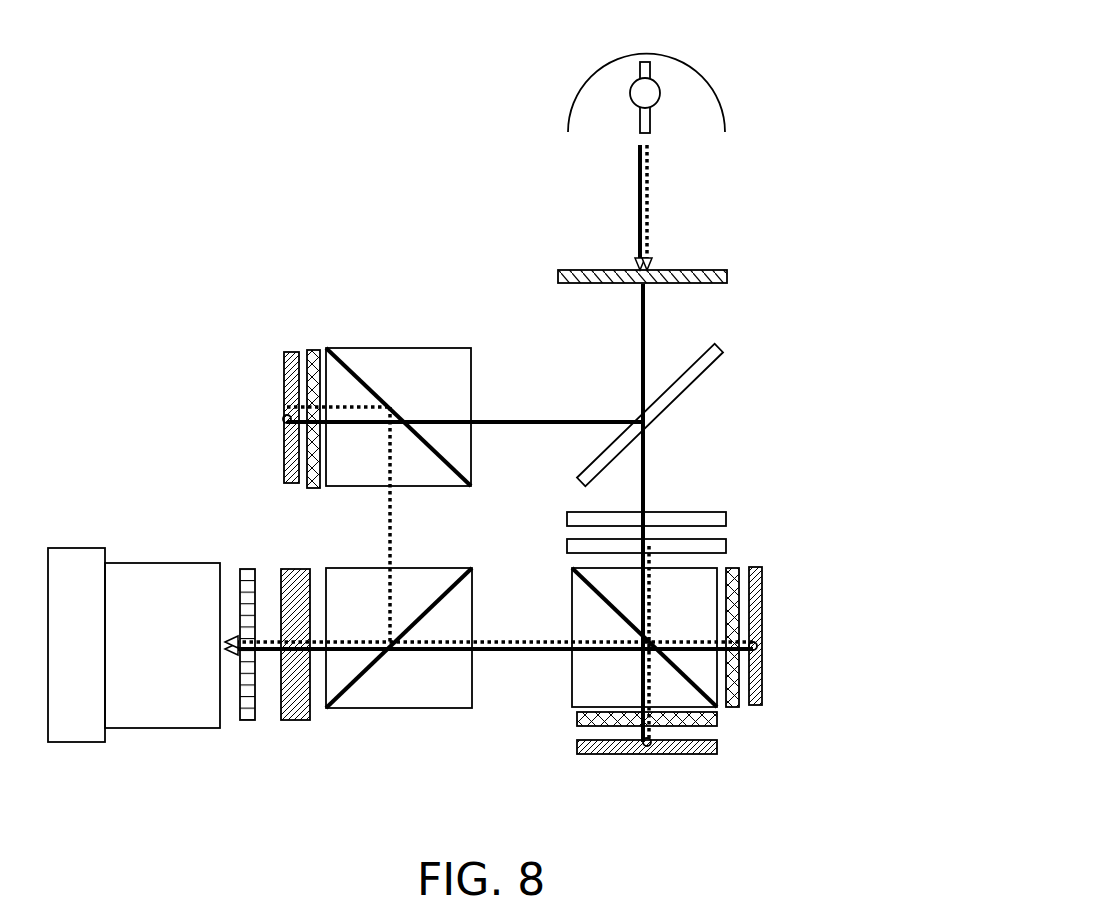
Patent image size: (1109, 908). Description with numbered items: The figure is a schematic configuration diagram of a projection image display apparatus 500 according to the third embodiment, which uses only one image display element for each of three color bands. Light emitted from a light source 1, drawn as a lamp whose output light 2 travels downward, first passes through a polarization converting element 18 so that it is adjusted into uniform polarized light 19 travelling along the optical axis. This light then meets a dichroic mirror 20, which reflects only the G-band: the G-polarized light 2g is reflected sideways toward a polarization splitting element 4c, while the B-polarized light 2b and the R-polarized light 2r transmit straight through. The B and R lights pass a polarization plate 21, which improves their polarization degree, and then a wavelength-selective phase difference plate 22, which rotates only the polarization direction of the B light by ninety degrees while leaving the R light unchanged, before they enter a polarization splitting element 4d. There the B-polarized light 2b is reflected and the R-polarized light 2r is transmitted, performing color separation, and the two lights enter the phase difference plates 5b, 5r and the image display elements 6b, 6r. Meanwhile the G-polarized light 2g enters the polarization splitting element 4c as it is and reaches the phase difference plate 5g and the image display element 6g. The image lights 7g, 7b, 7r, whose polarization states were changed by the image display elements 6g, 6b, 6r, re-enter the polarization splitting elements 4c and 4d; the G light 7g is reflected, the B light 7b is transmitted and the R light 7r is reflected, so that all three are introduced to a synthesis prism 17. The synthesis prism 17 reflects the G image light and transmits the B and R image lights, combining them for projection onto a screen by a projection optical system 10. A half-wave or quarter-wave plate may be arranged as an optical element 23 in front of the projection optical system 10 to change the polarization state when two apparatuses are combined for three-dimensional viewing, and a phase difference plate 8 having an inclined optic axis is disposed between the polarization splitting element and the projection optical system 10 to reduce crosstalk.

The projection image display apparatus 500 is at (758, 96).
The light source 1 is at (643, 92).
The light from light source 2 is at (640, 145).
The polarization converting element 18 is at (727, 277).
The uniform polarized light 19 is at (643, 352).
The dichroic mirror 20 is at (720, 352).
The polarization plate 21 is at (700, 522).
The wavelength-selective phase difference plate 22 is at (718, 548).
The G-polarized light 2g is at (517, 422).
The G-polarized light (G image light) 7g is at (395, 532).
The polarization splitting element 4c is at (458, 352).
The phase difference plate 5g is at (318, 350).
The image display element 6g is at (295, 465).
The synthesis prism 17 is at (445, 688).
The polarization splitting element 4d is at (700, 578).
The phase difference plate 5b is at (740, 602).
The image display element 6b is at (760, 618).
The phase difference plate 5r is at (720, 722).
The image display element 6r is at (670, 752).
The B-polarized light 2b is at (690, 645).
The R-polarized light 2r is at (643, 688).
The R-polarized light (R image light) 7r is at (530, 653).
The B-polarized light (B image light) 7b is at (492, 637).
The projection optical system 10 is at (193, 571).
The optical element 23 is at (247, 700).
The phase difference plate 8 is at (297, 708).